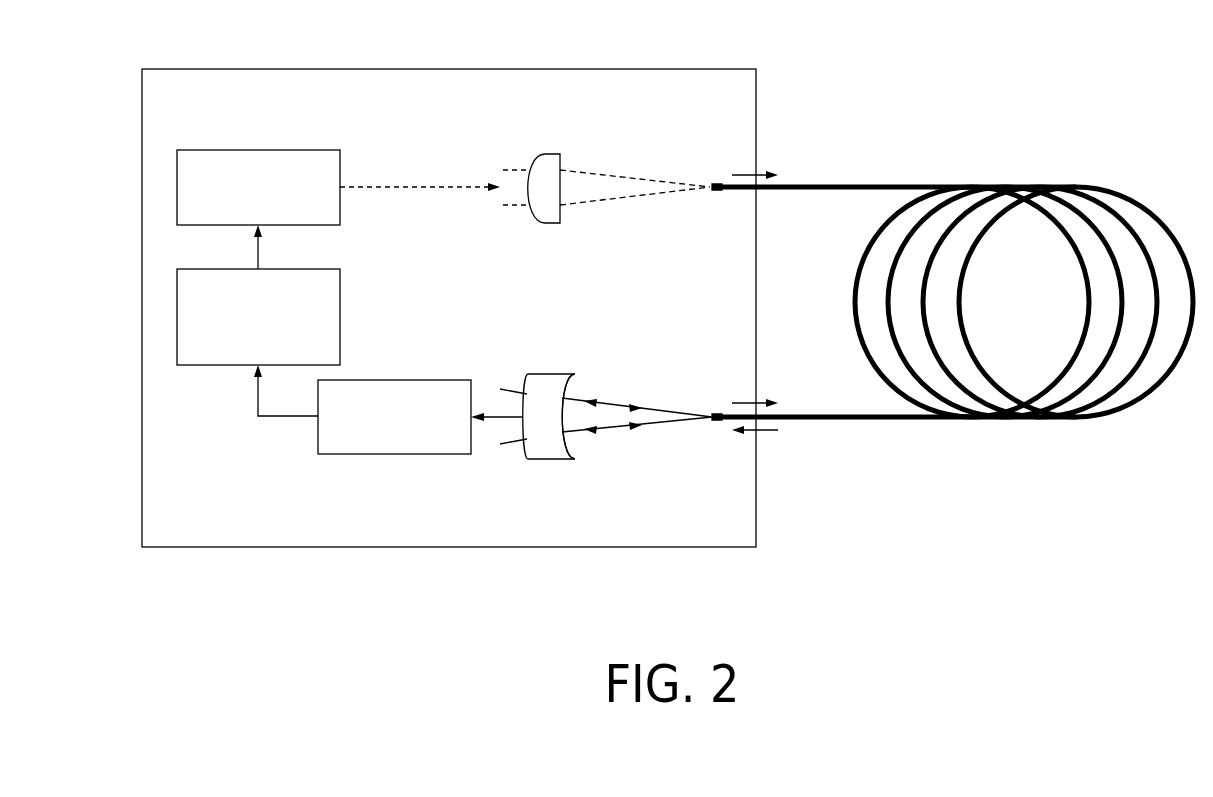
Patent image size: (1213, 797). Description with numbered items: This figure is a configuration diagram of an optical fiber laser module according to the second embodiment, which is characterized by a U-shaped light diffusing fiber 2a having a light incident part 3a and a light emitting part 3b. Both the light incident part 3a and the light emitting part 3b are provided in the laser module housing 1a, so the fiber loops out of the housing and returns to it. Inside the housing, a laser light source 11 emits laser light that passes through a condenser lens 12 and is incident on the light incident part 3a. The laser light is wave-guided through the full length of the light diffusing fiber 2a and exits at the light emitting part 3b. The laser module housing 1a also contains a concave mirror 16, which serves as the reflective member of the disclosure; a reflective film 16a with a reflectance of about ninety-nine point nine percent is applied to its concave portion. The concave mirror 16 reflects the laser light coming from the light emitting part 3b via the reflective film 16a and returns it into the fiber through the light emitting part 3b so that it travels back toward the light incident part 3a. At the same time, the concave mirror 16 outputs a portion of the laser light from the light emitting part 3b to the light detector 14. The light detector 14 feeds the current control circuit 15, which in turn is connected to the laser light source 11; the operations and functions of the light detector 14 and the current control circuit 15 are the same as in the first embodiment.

The laser module housing 1a is at (258, 68).
The laser light source 11 is at (292, 150).
The condenser lens 12 is at (555, 153).
The light detector 14 is at (405, 455).
The current control circuit 15 is at (340, 318).
The concave mirror 16 is at (530, 380).
The reflective film 16a is at (567, 445).
The light diffusing fiber 2a is at (828, 184).
The light incident part 3a is at (712, 184).
The light emitting part 3b is at (712, 414).